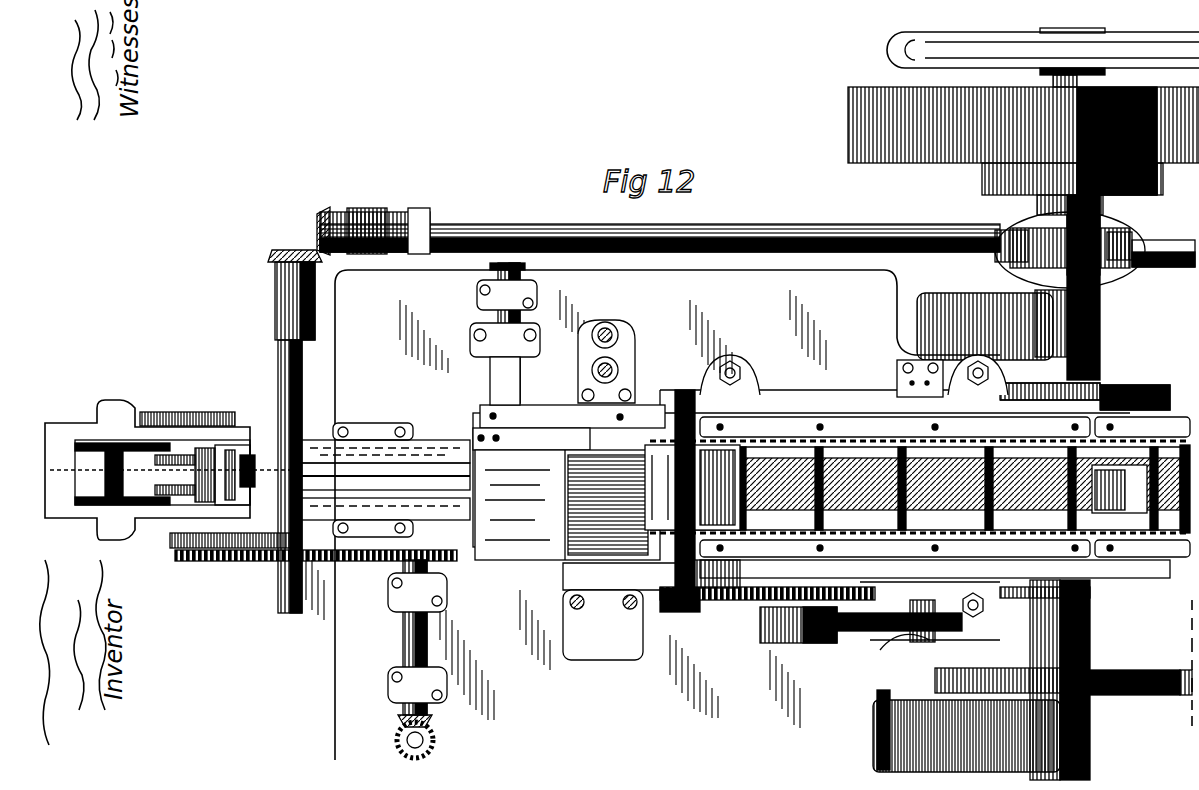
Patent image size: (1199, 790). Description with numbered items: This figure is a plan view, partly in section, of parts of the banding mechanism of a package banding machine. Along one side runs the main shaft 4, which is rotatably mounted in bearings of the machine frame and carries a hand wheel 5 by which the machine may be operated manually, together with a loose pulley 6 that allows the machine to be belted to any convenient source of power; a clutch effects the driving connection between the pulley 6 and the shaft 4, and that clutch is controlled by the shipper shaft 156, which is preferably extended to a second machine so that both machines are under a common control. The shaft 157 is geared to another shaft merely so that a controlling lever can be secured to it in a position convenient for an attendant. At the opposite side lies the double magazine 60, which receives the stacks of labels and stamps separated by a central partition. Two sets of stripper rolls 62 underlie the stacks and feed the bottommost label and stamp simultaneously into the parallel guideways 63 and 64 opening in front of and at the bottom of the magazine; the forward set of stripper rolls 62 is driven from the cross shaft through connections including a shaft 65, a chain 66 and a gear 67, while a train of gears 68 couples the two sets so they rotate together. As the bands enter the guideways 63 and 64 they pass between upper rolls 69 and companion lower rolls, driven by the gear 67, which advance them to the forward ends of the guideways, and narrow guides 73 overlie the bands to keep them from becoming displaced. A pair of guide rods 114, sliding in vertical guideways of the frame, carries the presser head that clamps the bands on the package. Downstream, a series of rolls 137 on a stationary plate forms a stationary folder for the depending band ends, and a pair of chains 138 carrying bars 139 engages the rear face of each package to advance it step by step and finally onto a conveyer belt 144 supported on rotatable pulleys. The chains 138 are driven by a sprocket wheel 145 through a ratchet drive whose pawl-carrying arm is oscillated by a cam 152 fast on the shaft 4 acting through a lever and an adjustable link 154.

The main shaft 4 is at (1078, 630).
The hand wheel 5 is at (900, 50).
The loose pulley 6 is at (850, 140).
The double magazine 60 is at (92, 448).
The stripper rolls 62 is at (205, 490).
The guideway 63 is at (455, 470).
The guideway 64 is at (432, 488).
The shaft 65 is at (405, 653).
The chain 66 is at (250, 562).
The gear 67 is at (170, 545).
The train of gears 68 is at (187, 408).
The upper rolls 69 is at (305, 470).
The narrow guides 73 is at (392, 470).
The guide rods 114 is at (612, 368).
The rolls 137 is at (745, 465).
The chains 138 is at (810, 650).
The bars 139 is at (915, 458).
The conveyer belt 144 is at (1120, 489).
The sprocket wheel 145 is at (686, 612).
The cam 152 is at (1122, 672).
The adjustable link 154 is at (862, 632).
The shipper shaft 156 is at (832, 240).
The shaft 157 is at (293, 615).